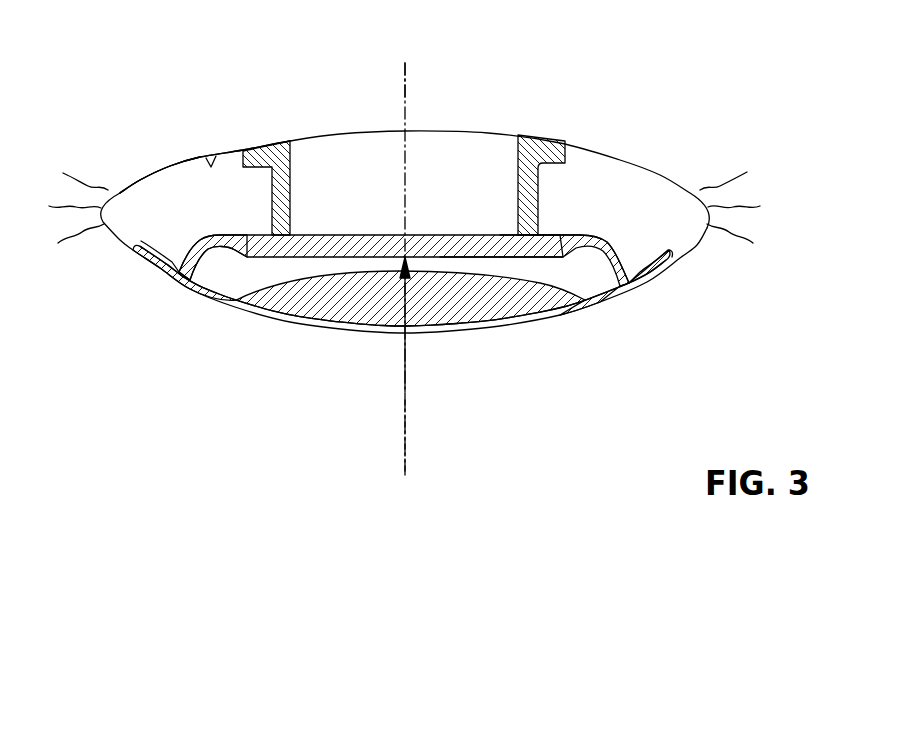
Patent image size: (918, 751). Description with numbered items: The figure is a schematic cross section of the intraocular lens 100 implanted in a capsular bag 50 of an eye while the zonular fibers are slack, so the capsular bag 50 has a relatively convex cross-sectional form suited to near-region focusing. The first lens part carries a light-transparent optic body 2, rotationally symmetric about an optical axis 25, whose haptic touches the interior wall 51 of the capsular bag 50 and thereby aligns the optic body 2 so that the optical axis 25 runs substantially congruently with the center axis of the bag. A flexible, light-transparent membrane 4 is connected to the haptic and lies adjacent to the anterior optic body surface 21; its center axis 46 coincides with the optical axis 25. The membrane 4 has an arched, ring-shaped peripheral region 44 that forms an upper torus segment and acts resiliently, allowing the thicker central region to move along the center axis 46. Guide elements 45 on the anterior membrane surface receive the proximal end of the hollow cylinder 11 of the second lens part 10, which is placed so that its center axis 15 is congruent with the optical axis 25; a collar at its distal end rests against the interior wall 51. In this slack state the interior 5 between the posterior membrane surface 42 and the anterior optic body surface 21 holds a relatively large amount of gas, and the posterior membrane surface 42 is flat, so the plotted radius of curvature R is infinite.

The intraocular lens 100 is at (672, 81).
The second lens part 10 is at (262, 120).
The capsular bag 50 is at (168, 167).
The interior wall 51 is at (211, 160).
The center axis 15 is at (405, 70).
The center axis 46 is at (405, 78).
The optical axis 25 is at (405, 440).
The membrane 4 is at (467, 240).
The peripheral region 44 is at (603, 236).
The guide elements 45 is at (540, 229).
The anterior optic body surface 21 is at (472, 264).
The posterior membrane surface 42 is at (503, 258).
The hollow cylinder 11 is at (538, 197).
The optic body 2 is at (300, 298).
The interior 5 is at (217, 261).
The radius of curvature R is at (405, 362).